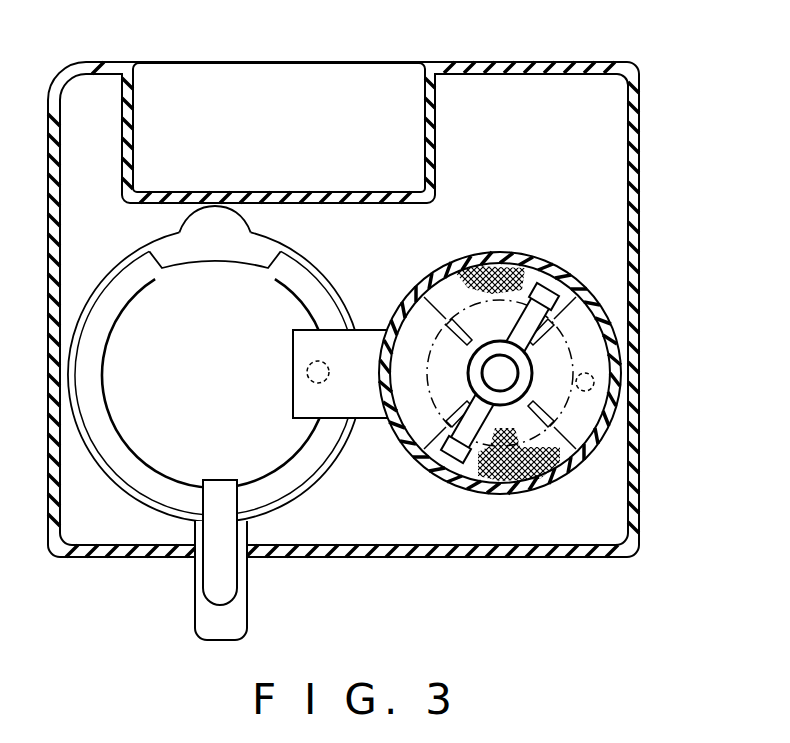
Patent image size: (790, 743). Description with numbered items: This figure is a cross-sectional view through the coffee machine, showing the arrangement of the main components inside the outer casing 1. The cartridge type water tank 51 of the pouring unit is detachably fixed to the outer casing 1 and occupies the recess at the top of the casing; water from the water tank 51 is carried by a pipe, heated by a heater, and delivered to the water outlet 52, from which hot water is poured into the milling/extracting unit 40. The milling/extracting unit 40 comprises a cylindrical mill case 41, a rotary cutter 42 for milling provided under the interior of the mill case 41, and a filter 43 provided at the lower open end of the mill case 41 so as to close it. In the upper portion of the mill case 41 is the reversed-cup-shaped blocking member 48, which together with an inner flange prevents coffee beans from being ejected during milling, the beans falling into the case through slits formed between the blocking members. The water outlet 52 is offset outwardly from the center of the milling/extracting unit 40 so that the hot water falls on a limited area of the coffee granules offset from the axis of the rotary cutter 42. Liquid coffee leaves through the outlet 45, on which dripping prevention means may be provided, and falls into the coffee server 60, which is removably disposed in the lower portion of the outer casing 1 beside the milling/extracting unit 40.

The outer casing 1 is at (634, 163).
The milling/extracting unit 40 is at (508, 295).
The mill case 41 is at (592, 456).
The rotary cutter 42 is at (548, 296).
The filter 43 is at (523, 280).
The outlet 45 is at (307, 378).
The blocking member 48 is at (577, 368).
The water tank 51 is at (372, 63).
The water outlet 52 is at (594, 379).
The coffee server 60 is at (110, 447).